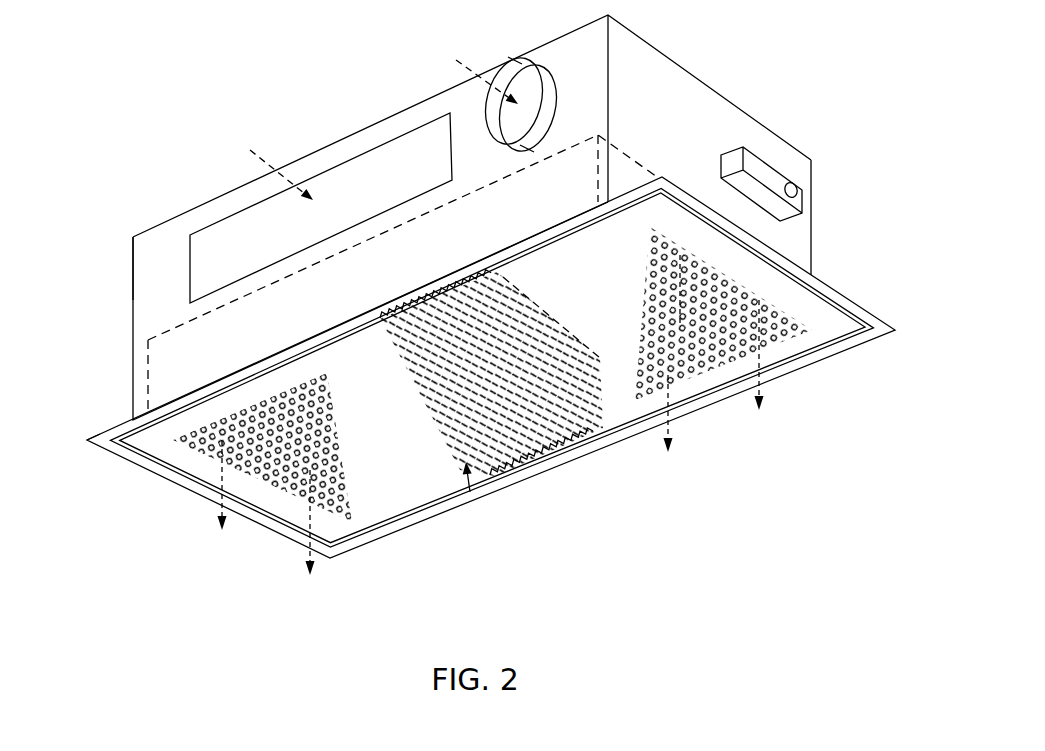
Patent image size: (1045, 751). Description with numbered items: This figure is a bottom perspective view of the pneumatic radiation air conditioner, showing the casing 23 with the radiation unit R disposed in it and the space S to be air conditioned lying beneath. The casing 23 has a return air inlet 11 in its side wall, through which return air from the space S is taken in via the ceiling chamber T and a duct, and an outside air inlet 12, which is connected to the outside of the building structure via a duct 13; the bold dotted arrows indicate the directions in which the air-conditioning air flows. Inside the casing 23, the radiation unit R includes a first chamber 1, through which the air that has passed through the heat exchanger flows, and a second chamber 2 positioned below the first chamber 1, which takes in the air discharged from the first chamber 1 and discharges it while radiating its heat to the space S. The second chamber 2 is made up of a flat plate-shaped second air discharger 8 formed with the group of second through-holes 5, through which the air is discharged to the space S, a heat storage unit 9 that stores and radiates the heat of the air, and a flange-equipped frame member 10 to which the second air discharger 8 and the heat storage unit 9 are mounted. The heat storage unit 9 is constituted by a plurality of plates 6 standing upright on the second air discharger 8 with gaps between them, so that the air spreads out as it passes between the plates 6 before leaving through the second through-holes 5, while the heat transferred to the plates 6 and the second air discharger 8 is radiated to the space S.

The first chamber 1 is at (155, 333).
The second chamber 2 is at (352, 560).
The second through-holes 5 is at (288, 503).
The plates 6 is at (535, 473).
The second air discharger 8 is at (358, 512).
The heat storage unit 9 is at (473, 494).
The flange-equipped frame member 10 is at (178, 484).
The return air inlet 11 is at (358, 154).
The outside air inlet 12 is at (527, 67).
The duct 13 is at (475, 118).
The casing 23 is at (160, 224).
The radiation unit R is at (100, 428).
The ceiling chamber T is at (214, 139).
The space to be air conditioned S is at (607, 624).